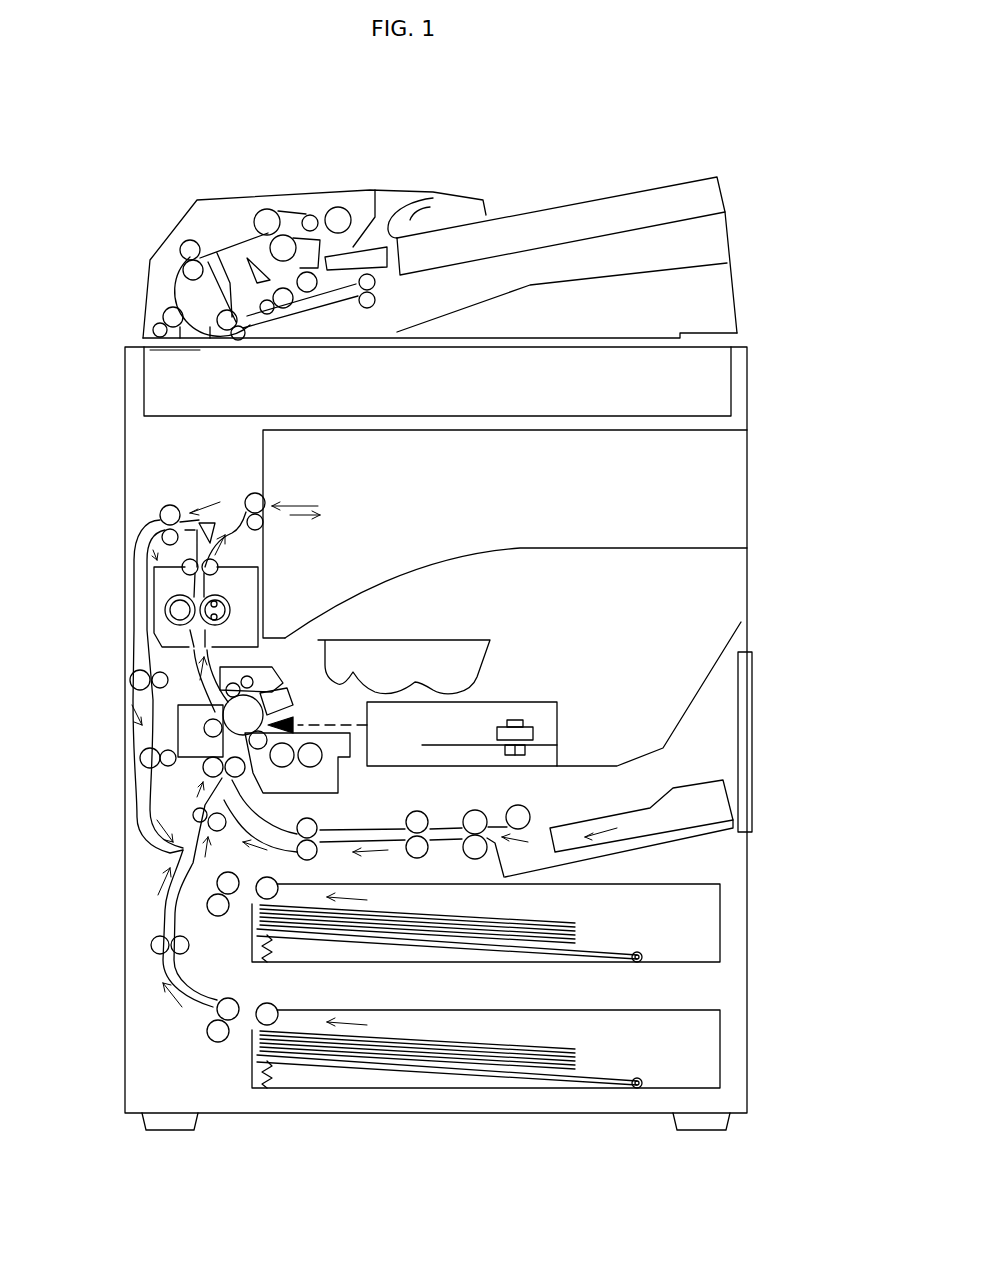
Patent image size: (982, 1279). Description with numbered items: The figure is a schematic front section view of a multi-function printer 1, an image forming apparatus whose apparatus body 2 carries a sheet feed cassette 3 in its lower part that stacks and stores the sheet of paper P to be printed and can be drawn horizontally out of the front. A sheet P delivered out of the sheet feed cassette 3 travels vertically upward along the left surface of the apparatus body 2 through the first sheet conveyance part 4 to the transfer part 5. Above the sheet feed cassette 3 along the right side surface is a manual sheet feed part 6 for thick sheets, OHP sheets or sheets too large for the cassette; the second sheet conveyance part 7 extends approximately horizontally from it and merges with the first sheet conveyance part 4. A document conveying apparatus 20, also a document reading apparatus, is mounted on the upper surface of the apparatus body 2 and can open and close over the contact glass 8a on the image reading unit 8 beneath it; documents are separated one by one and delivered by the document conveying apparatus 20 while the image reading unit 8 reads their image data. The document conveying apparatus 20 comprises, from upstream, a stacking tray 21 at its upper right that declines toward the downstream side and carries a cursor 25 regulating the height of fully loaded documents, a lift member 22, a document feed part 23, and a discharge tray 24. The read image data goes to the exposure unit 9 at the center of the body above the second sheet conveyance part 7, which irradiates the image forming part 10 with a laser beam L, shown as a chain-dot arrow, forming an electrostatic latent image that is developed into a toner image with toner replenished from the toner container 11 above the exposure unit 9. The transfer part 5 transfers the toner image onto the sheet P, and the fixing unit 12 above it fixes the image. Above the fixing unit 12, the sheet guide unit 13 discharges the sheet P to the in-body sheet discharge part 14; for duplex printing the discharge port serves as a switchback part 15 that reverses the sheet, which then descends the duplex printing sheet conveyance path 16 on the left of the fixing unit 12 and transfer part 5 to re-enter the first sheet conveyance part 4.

The multi-function printer 1 is at (612, 142).
The apparatus body 2 is at (773, 347).
The sheet feed cassette 3 is at (720, 928).
The first sheet conveyance part 4 is at (154, 918).
The transfer part 5 is at (178, 733).
The manual sheet feed part 6 is at (703, 803).
The second sheet conveyance part 7 is at (386, 814).
The image reading unit 8 is at (700, 387).
The contact glass 8a is at (194, 349).
The exposure unit 9 is at (532, 700).
The image forming part 10 is at (278, 666).
The toner container 11 is at (440, 637).
The fixing unit 12 is at (153, 599).
The sheet guide unit 13 is at (201, 495).
The in-body sheet discharge part 14 is at (353, 597).
The switchback part 15 is at (270, 491).
The duplex printing sheet conveyance path 16 is at (156, 662).
The document conveying apparatus 20 is at (400, 187).
The stacking tray 21 is at (617, 193).
The lift member 22 is at (360, 248).
The document feed part 23 is at (206, 224).
The discharge tray 24 is at (398, 330).
The cursor 25 is at (424, 199).
The laser beam L is at (352, 730).
The sheet of paper P is at (490, 1075).